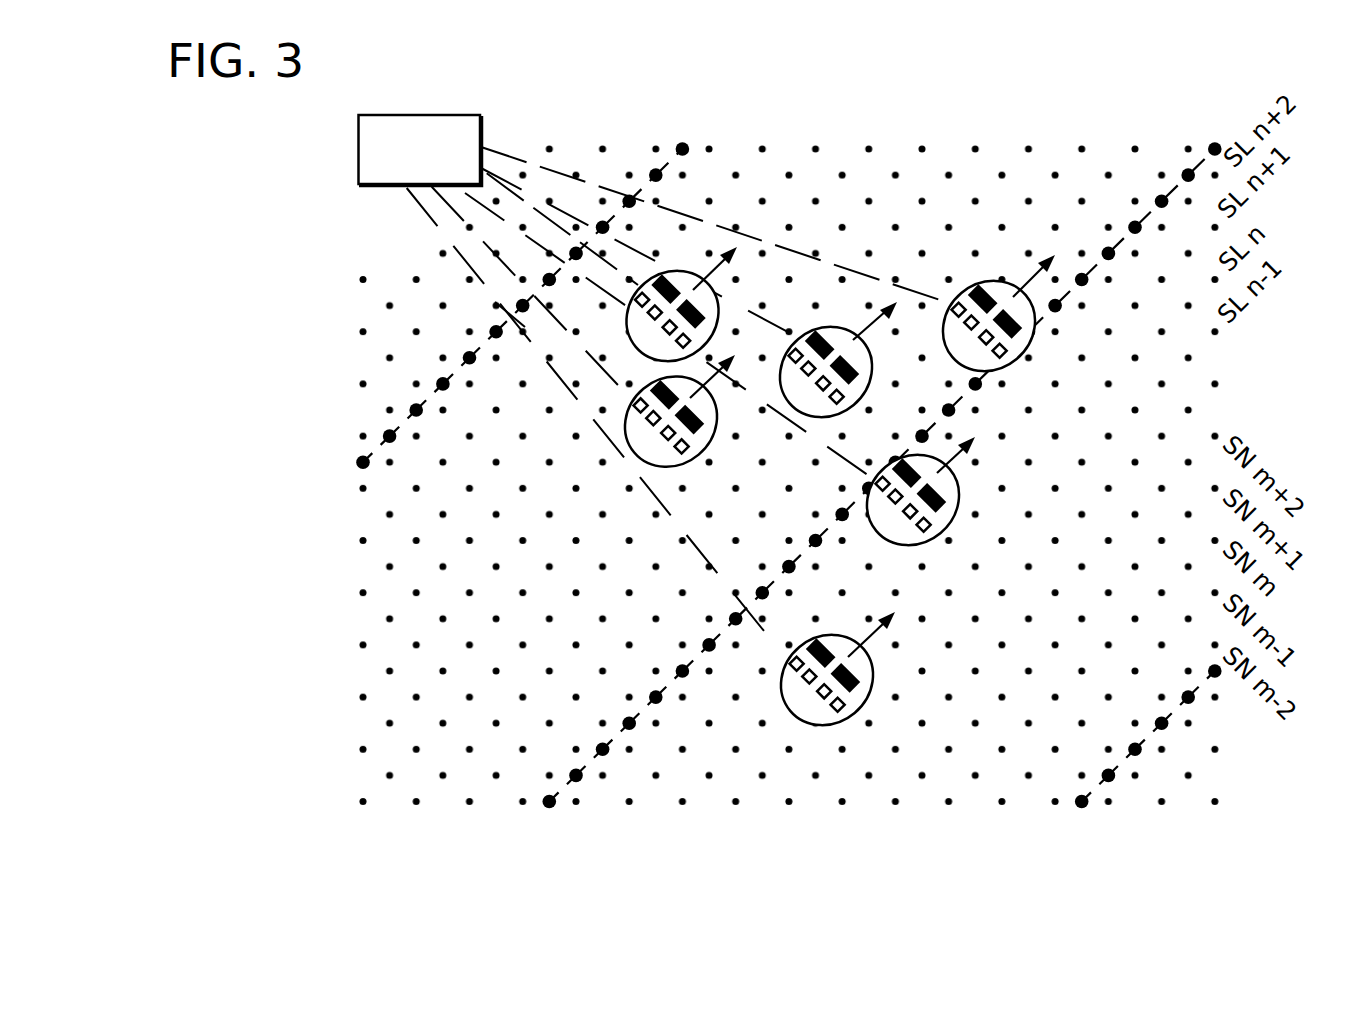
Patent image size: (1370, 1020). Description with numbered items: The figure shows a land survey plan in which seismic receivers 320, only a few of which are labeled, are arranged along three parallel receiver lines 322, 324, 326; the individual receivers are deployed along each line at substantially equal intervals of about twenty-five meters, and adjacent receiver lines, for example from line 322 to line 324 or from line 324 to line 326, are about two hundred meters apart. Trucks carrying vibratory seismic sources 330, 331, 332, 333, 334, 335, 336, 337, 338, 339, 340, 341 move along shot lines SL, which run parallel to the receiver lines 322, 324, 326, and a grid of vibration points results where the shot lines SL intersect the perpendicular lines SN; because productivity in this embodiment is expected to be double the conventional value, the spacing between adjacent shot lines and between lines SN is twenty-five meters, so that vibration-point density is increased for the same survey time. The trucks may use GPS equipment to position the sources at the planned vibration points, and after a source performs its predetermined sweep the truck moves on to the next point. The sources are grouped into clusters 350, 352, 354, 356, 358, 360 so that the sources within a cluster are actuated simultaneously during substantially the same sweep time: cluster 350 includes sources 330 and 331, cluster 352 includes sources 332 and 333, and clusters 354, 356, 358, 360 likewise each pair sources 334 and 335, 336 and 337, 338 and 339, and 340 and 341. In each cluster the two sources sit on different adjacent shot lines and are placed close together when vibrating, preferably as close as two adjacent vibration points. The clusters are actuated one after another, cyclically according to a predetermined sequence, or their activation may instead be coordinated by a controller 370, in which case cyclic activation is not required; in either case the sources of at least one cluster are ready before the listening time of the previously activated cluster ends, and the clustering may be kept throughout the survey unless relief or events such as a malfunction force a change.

The seismic receiver 320 is at (683, 147).
The receiver line 322 is at (669, 160).
The receiver line 324 is at (617, 737).
The receiver line 326 is at (1120, 763).
The vibratory seismic source 330 is at (667, 283).
The vibratory seismic source 331 is at (697, 296).
The vibratory seismic source 332 is at (645, 394).
The vibratory seismic source 333 is at (680, 440).
The vibratory seismic source 334 is at (825, 330).
The vibratory seismic source 335 is at (843, 390).
The vibratory seismic source 336 is at (973, 300).
The vibratory seismic source 337 is at (1017, 337).
The vibratory seismic source 338 is at (893, 470).
The vibratory seismic source 339 is at (942, 515).
The vibratory seismic source 340 is at (807, 660).
The vibratory seismic source 341 is at (843, 697).
The cluster 350 is at (630, 320).
The cluster 352 is at (657, 463).
The cluster 354 is at (817, 417).
The cluster 356 is at (1008, 372).
The cluster 358 is at (932, 545).
The cluster 360 is at (837, 724).
The controller 370 is at (413, 115).